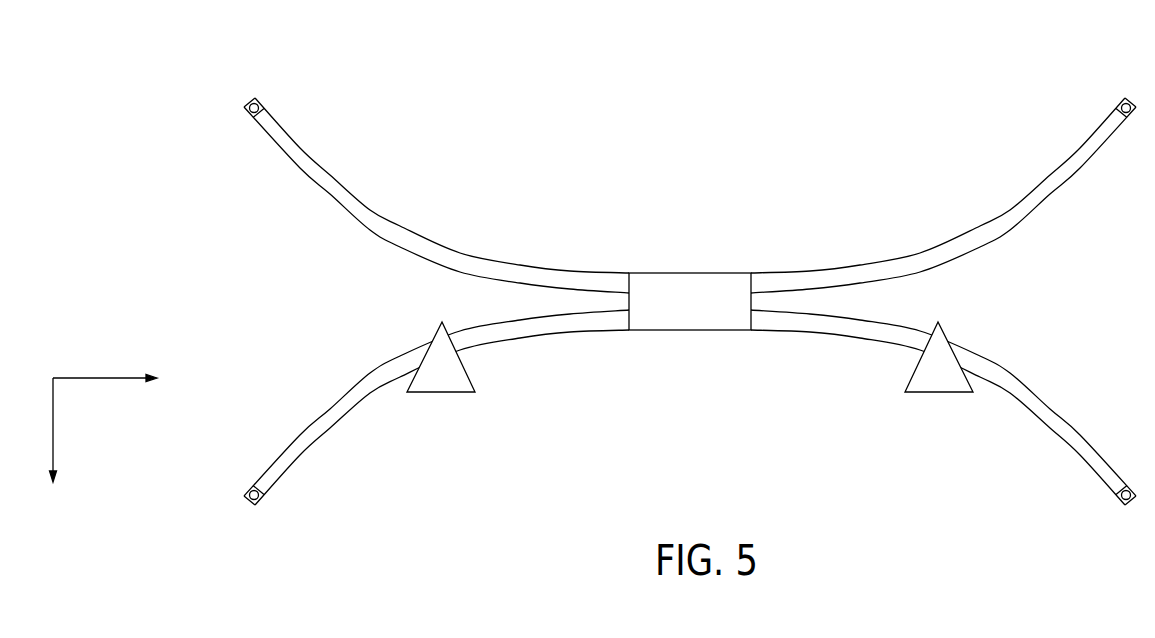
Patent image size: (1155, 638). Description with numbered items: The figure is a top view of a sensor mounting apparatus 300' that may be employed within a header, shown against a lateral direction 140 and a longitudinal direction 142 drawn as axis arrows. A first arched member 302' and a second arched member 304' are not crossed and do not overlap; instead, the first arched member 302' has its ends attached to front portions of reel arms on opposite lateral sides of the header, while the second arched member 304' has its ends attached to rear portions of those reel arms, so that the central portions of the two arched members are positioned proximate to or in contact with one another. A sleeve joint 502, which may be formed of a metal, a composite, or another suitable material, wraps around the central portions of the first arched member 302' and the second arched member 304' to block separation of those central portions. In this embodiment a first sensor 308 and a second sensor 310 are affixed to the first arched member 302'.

The sensor mounting apparatus 300' is at (699, 259).
The second arched member 304' is at (436, 183).
The first arched member 302' is at (436, 419).
The sleeve joint 502 is at (697, 325).
The first sensor 308 is at (443, 375).
The second sensor 310 is at (943, 387).
The lateral direction 140 is at (98, 377).
The longitudinal direction 142 is at (54, 423).